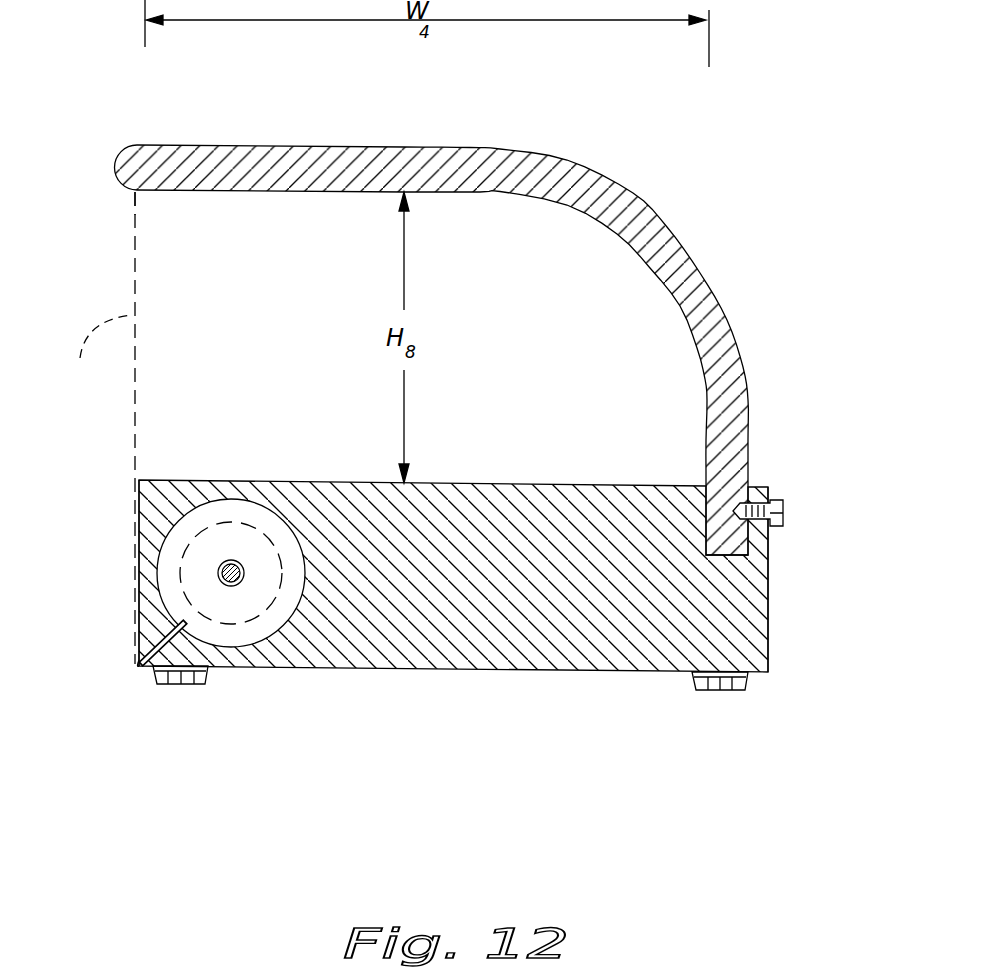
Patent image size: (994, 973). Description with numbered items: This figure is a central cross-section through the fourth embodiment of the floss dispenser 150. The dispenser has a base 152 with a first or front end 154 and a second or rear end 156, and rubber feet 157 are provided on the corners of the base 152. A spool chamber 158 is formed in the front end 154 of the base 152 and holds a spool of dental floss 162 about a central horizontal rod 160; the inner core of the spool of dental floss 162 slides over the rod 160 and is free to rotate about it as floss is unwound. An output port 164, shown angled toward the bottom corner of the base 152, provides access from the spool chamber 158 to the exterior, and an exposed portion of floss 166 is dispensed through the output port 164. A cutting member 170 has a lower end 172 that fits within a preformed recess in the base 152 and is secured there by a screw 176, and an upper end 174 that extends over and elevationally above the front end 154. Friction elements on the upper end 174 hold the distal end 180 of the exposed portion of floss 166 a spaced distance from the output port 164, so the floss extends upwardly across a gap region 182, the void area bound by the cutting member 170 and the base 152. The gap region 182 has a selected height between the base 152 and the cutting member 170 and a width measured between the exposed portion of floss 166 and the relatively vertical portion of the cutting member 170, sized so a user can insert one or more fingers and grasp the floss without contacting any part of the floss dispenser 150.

The floss dispenser 150 is at (453, 448).
The base 152 is at (445, 601).
The first or front end 154 is at (153, 503).
The second or rear end 156 is at (752, 582).
The rubber feet 157 is at (175, 686).
The spool chamber 158 is at (252, 517).
The central horizontal rod 160 is at (238, 583).
The spool of dental floss 162 is at (198, 520).
The output port 164 is at (152, 667).
The exposed portion of floss 166 is at (93, 354).
The cutting member 170 is at (434, 334).
The lower end 172 is at (723, 520).
The upper end 174 is at (160, 157).
The screw 176 is at (785, 511).
The distal end 180 is at (138, 205).
The gap region 182 is at (225, 295).